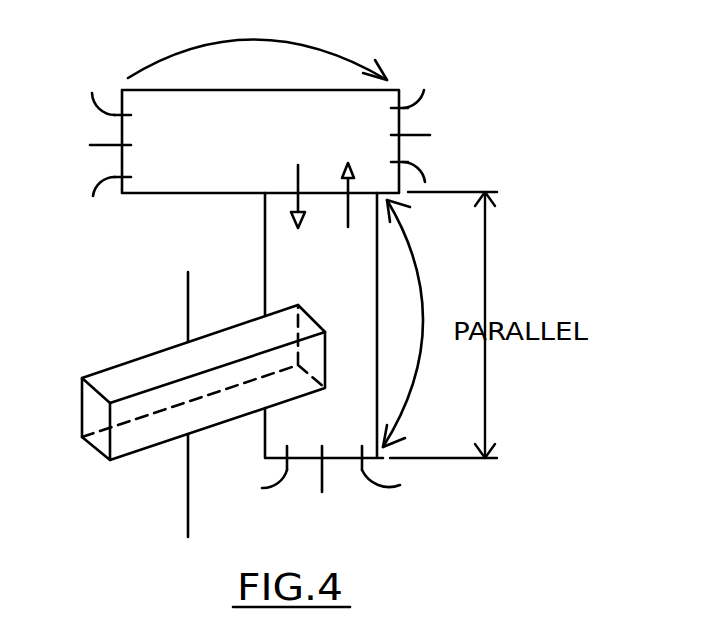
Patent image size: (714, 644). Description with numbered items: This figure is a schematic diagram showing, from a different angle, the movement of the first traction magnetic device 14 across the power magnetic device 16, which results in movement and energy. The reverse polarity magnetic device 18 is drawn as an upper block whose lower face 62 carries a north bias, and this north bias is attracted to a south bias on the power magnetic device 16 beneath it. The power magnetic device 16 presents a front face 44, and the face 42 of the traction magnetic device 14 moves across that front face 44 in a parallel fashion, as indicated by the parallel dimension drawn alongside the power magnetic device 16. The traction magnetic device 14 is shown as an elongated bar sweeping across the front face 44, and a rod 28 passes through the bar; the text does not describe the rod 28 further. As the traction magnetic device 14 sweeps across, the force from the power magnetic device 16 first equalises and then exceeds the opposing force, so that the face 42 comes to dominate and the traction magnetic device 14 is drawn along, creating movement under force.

The magnetic device 18 is at (157, 90).
The lower face 62 is at (140, 194).
The power magnetic device 16 is at (265, 240).
The front face 44 is at (299, 283).
The shaft 28 is at (188, 318).
The first traction magnetic device 14 is at (93, 373).
The face 42 is at (328, 363).